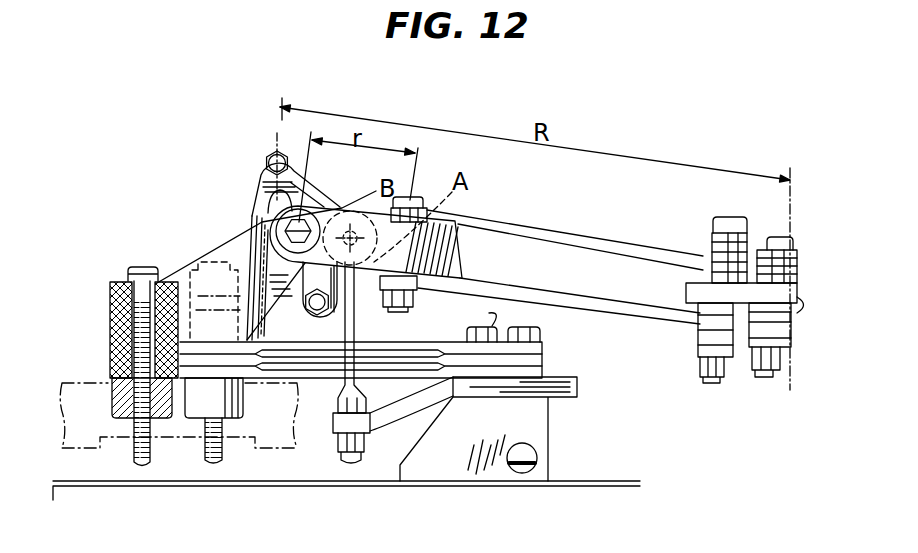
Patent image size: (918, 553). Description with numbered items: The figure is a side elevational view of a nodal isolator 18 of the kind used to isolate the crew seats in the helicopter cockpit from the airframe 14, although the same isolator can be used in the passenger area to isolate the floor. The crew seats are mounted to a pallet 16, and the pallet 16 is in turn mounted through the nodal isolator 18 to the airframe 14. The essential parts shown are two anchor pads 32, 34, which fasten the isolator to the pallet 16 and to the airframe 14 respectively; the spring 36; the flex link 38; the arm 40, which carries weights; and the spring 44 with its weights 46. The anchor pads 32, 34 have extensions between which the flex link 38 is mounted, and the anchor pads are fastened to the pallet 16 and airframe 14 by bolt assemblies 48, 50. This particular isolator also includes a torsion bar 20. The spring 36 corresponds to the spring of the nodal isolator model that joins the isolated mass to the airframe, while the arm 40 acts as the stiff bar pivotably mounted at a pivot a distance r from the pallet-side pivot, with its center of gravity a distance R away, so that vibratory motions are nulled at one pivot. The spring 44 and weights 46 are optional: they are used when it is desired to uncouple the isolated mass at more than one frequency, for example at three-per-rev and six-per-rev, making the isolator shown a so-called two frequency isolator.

The airframe 14 is at (615, 486).
The pallet 16 is at (85, 382).
The nodal isolator 18 is at (240, 198).
The torsion bar 20 is at (312, 203).
The anchor pad 32 is at (186, 268).
The anchor pad 34 is at (548, 420).
The spring 36 is at (400, 342).
The flex link 38 is at (345, 327).
The arm 40 is at (497, 245).
The spring 44 is at (618, 242).
The weights 46 is at (750, 222).
The bolt assembly 48 is at (139, 265).
The bolt assembly 50 is at (516, 327).